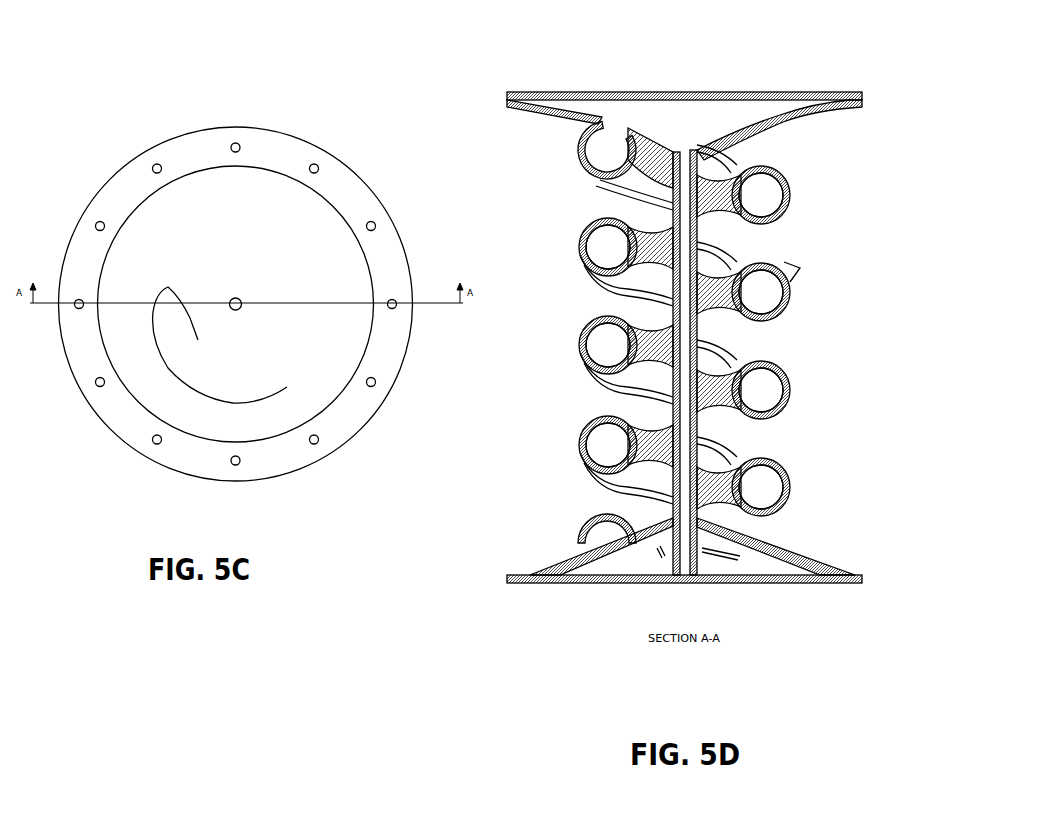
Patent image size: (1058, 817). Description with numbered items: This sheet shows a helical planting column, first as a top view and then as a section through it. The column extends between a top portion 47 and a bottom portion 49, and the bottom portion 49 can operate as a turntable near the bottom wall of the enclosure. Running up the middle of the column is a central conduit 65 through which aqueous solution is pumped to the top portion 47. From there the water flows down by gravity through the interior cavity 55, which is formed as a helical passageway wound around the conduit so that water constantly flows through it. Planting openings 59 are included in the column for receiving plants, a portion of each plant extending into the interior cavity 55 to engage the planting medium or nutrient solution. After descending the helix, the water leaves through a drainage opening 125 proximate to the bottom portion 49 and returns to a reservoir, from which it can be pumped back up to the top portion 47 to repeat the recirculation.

In FIG. 5C, the top portion 47 is at (197, 137).
In FIG. 5D, the top portion 47 is at (827, 93).
In FIG. 5D, the bottom portion 49 is at (503, 576).
In FIG. 5C, the interior cavity 55 is at (183, 350).
In FIG. 5D, the interior cavity 55 is at (613, 140).
In FIG. 5D, the planting opening 59 is at (783, 268).
In FIG. 5C, the central conduit 65 is at (242, 300).
In FIG. 5D, the central conduit 65 is at (687, 420).
In FIG. 5D, the drainage opening 125 is at (720, 567).